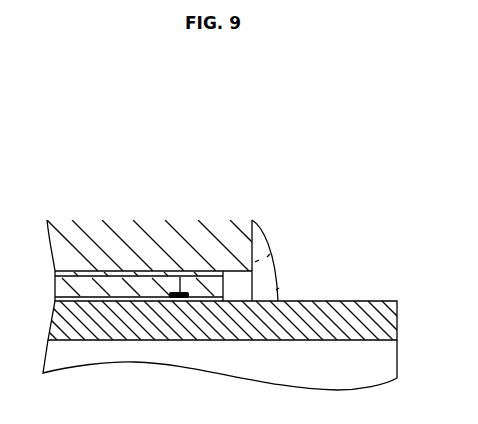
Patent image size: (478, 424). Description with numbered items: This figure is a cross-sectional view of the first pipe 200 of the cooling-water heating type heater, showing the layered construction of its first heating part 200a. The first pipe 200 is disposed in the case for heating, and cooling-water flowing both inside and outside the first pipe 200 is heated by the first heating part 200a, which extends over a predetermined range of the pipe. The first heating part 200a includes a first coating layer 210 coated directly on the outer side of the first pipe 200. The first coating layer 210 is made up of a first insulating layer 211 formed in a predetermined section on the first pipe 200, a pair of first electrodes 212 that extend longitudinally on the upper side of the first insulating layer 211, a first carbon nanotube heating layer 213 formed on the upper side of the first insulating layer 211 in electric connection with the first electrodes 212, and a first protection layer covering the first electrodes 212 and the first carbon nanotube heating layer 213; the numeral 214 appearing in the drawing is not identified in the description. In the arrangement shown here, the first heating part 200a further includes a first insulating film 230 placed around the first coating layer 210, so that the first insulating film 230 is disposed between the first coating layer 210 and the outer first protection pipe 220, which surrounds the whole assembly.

The first pipe 200 is at (369, 190).
The first heating part 200a is at (215, 104).
The first insulating film 230 is at (76, 271).
The first protection pipe 220 is at (95, 228).
The first coating layer 210 is at (277, 140).
The first insulating layer 211 is at (143, 298).
The active layer 214 is at (168, 272).
The first carbon nanotube heating layer 213 is at (180, 277).
The first electrodes 212 is at (186, 290).